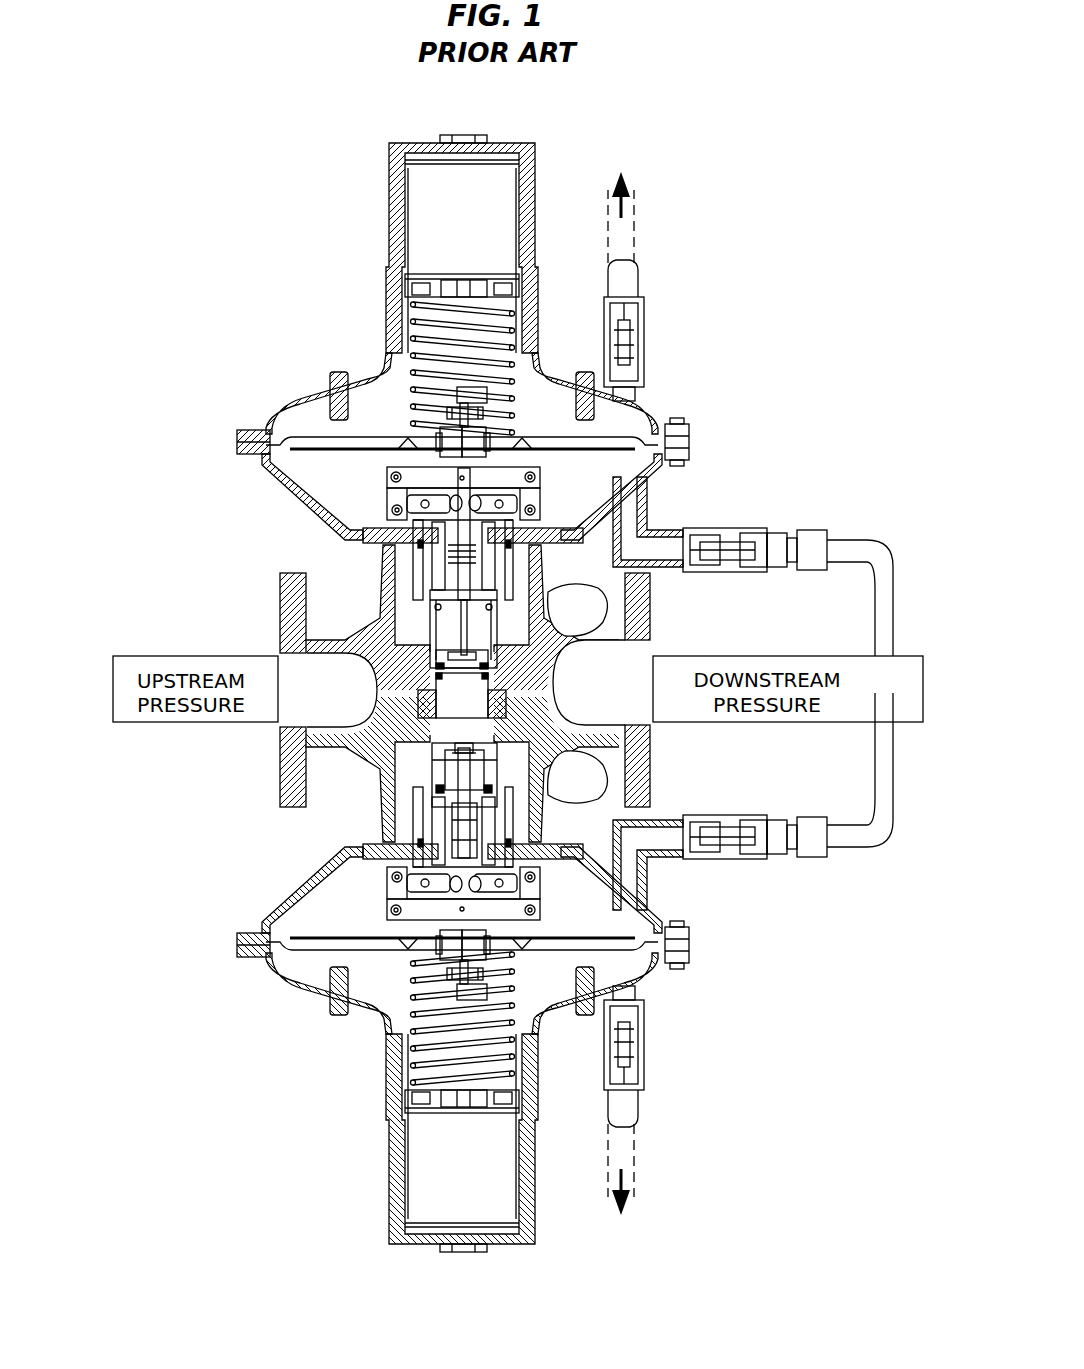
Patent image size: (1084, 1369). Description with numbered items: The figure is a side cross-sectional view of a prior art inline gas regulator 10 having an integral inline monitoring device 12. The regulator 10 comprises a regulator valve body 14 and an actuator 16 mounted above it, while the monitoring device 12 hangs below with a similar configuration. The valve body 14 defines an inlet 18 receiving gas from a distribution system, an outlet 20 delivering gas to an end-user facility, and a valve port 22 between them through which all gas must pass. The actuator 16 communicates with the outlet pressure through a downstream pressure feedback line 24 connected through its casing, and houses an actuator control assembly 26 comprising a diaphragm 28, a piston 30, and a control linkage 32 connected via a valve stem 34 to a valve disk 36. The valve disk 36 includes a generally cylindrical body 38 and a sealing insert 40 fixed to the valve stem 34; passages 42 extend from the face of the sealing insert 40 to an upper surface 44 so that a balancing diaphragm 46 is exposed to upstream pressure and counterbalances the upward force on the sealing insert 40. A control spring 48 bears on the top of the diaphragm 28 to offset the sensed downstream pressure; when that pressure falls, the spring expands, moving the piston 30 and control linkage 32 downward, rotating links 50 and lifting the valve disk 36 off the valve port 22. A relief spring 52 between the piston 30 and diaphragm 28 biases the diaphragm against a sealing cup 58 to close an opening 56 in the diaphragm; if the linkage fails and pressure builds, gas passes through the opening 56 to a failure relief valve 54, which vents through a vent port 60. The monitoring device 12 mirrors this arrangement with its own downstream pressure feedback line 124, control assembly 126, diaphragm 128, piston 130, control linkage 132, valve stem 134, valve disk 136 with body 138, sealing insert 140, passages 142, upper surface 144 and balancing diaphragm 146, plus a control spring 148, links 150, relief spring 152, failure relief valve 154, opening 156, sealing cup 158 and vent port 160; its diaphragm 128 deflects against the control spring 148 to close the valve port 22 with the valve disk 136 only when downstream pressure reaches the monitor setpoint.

The inline gas regulator 10 is at (258, 137).
The inline monitoring device 12 is at (331, 1177).
The regulator valve body 14 is at (264, 776).
The actuator 16 is at (381, 214).
The inlet 18 is at (277, 729).
The outlet 20 is at (654, 724).
The valve port 22 is at (463, 712).
The downstream pressure feedback line 24 is at (843, 540).
The actuator control assembly 26 is at (381, 387).
The diaphragm 28 is at (648, 428).
The piston 30 is at (470, 396).
The control linkage 32 is at (388, 477).
The valve stem 34 is at (417, 543).
The valve disk 36 is at (445, 640).
The cylindrical body 38 is at (493, 643).
The sealing insert 40 is at (490, 665).
The passages 42 is at (462, 655).
The upper surface 44 is at (492, 598).
The balancing diaphragm 46 is at (462, 605).
The control spring 48 is at (430, 327).
The links 50 is at (415, 505).
The relief spring 52 is at (462, 413).
The failure relief valve 54 is at (644, 325).
The opening 56 is at (447, 442).
The sealing cup 58 is at (482, 452).
The vent port 60 is at (641, 272).
The downstream pressure feedback line 124 is at (872, 848).
The control assembly 126 is at (374, 973).
The diaphragm 128 is at (660, 957).
The piston 130 is at (490, 990).
The control linkage 132 is at (420, 917).
The valve stem 134 is at (392, 851).
The valve disk 136 is at (447, 783).
The cylindrical body 138 is at (487, 772).
The sealing insert 140 is at (483, 744).
The passages 142 is at (462, 766).
The upper surface 144 is at (490, 805).
The balancing diaphragm 146 is at (468, 845).
The control spring 148 is at (430, 1067).
The links 150 is at (427, 888).
The relief spring 152 is at (423, 973).
The failure relief valve 154 is at (645, 1057).
The opening 156 is at (447, 927).
The sealing cup 158 is at (483, 928).
The vent port 160 is at (640, 1120).